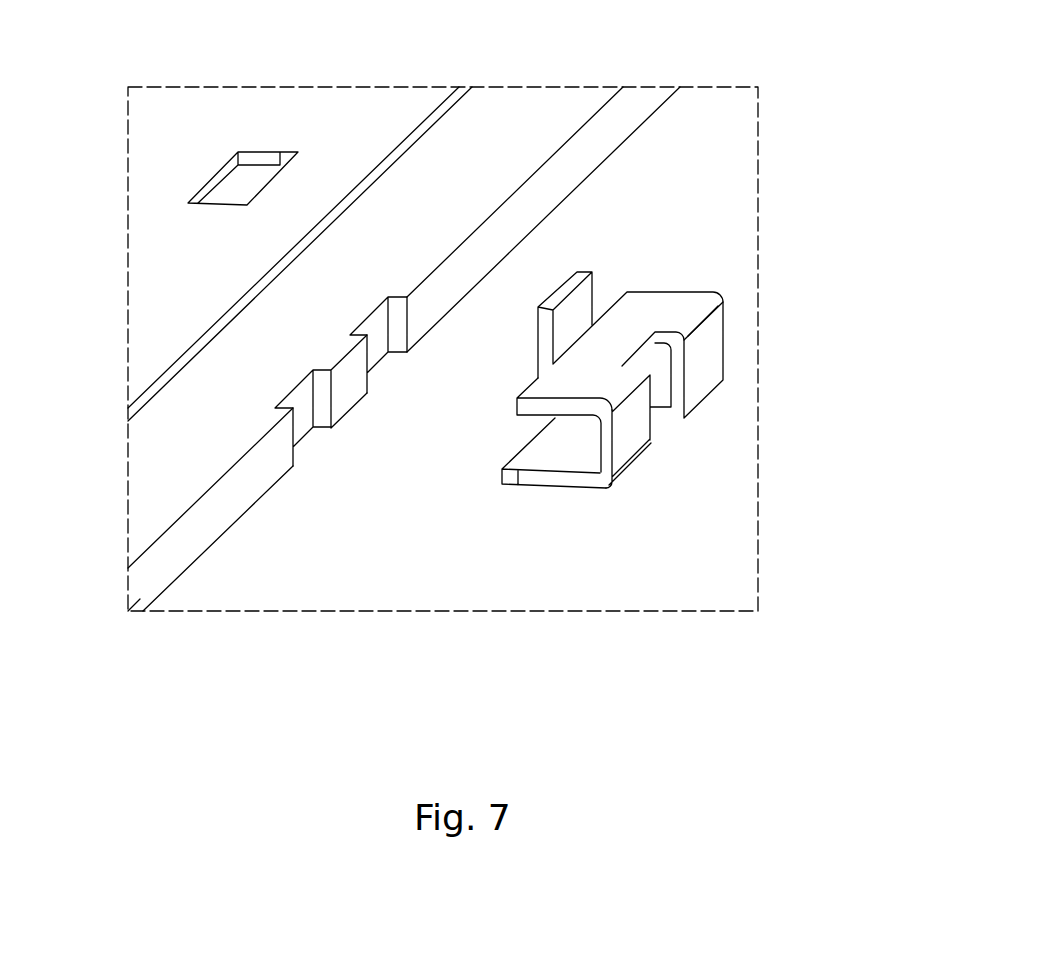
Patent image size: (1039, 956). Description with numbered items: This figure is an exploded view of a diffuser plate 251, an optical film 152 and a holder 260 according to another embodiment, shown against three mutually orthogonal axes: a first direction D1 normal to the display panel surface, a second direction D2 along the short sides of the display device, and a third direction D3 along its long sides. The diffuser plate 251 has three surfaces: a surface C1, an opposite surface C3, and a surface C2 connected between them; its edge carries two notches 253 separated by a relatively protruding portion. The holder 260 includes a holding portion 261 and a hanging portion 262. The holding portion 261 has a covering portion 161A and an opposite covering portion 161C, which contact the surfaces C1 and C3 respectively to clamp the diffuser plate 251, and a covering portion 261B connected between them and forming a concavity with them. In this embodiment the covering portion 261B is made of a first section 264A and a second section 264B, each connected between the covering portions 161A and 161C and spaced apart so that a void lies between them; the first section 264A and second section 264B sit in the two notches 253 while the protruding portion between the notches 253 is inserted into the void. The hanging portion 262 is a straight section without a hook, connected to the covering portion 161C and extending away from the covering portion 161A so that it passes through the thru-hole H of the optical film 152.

The thru-hole H is at (258, 163).
The optical film 152 is at (348, 115).
The diffuser plate 251 is at (512, 115).
The notches 253 is at (394, 376).
The holder 260 is at (672, 388).
The holding portion 261 is at (945, 168).
The covering portion 261B is at (772, 396).
The hanging portion 262 is at (583, 270).
The first section 264A is at (633, 440).
The second section 264B is at (705, 358).
The covering portion 161A is at (551, 490).
The covering portion 161C is at (672, 307).
The surface C1 is at (240, 552).
The surface C2 is at (138, 587).
The surface C3 is at (150, 523).
The first direction D1 is at (855, 640).
The second direction D2 is at (855, 640).
The third direction D3 is at (855, 640).